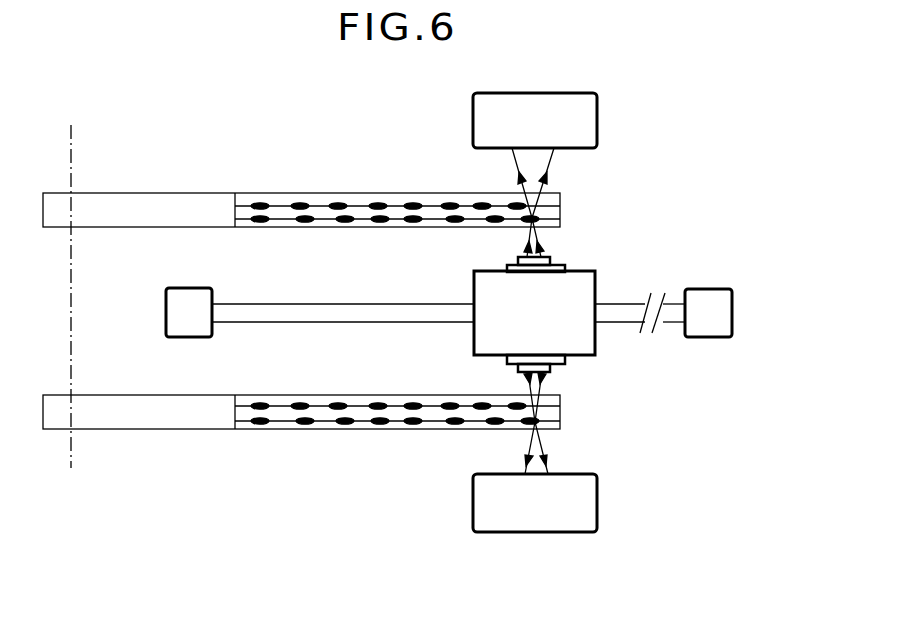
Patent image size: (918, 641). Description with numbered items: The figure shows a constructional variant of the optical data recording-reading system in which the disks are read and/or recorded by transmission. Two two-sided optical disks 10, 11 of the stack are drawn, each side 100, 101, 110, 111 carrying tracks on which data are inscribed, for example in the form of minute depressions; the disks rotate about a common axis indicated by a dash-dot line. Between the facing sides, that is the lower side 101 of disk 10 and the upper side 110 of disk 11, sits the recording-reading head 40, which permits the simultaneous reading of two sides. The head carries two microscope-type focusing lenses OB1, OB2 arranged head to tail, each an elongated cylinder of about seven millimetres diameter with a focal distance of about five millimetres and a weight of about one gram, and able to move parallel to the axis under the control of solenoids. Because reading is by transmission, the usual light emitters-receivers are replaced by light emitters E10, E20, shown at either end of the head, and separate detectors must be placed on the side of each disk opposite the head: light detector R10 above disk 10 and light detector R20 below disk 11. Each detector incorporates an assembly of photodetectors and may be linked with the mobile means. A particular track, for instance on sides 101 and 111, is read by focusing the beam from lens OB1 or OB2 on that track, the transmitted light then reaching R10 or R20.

The optical disk 10 is at (145, 193).
The optical disk 11 is at (138, 420).
The side of disk 100 is at (560, 197).
The side of disk 101 is at (560, 226).
The side of disk 110 is at (560, 401).
The side of disk 111 is at (553, 424).
The recording-reading head 40 is at (597, 276).
The focusing lens OB1 is at (517, 251).
The focusing lens OB2 is at (520, 368).
The light emitter E10 is at (691, 338).
The light emitter E20 is at (170, 338).
The light detector R10 is at (485, 93).
The light detector R20 is at (483, 534).